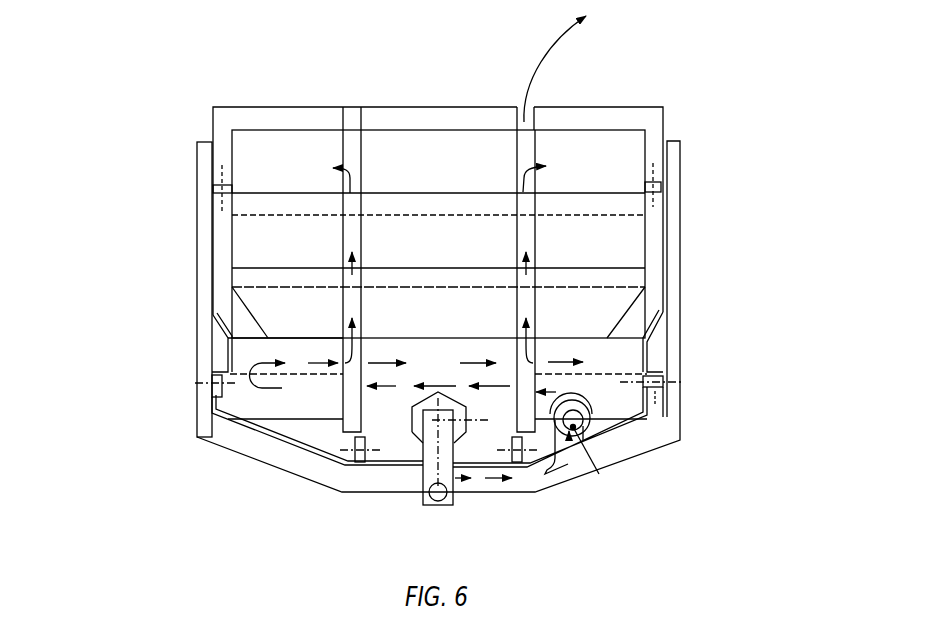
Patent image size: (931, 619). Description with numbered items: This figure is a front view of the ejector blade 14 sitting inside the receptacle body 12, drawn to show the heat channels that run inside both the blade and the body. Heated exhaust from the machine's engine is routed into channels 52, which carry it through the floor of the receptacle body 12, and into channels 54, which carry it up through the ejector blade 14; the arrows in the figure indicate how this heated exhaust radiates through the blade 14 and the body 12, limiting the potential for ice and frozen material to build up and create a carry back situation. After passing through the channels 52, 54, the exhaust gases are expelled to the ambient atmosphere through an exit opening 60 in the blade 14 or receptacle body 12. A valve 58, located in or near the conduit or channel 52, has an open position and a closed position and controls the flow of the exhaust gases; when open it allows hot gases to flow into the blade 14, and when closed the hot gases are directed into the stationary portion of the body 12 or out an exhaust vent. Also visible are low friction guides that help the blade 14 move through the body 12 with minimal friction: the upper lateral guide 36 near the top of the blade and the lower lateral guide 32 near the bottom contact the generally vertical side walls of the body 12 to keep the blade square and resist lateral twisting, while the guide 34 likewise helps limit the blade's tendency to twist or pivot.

The receptacle body 12 is at (203, 152).
The ejector blade 14 is at (435, 250).
The lower lateral low friction guide 32 is at (664, 382).
The low friction guide 34 is at (217, 389).
The upper lateral low friction guide 36 is at (220, 189).
The channels 52 is at (500, 487).
The channels 54 is at (353, 233).
The valve 58 is at (590, 412).
The exit opening 60 is at (517, 100).